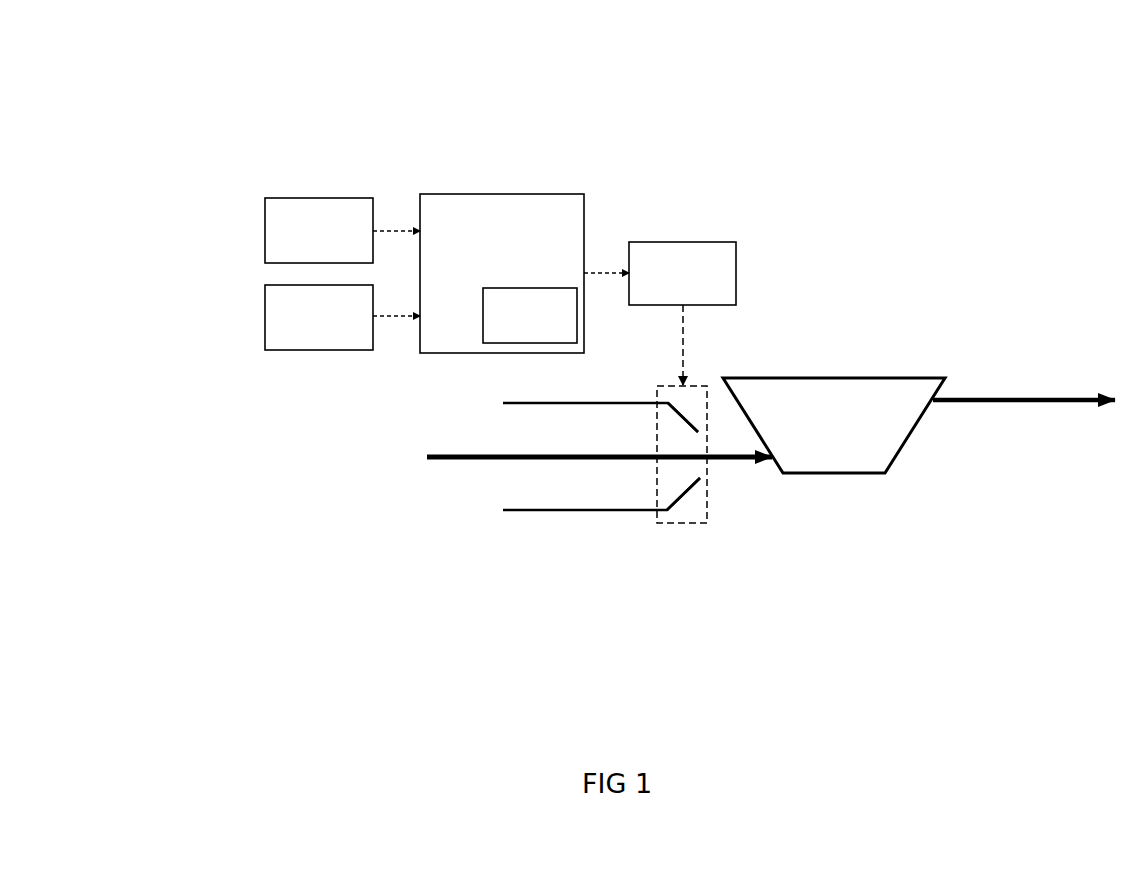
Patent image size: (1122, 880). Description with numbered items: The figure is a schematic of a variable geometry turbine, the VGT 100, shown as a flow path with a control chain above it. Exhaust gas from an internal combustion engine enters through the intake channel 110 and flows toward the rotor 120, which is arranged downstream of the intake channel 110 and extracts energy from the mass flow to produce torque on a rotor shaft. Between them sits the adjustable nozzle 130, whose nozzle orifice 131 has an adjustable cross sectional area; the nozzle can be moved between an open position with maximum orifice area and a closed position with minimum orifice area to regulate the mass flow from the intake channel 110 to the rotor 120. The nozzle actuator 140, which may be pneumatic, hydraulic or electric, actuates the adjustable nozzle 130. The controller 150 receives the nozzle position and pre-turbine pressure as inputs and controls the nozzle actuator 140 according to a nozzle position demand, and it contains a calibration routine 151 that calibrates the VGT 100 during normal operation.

The VGT 100 is at (147, 73).
The intake channel 110 is at (473, 500).
The rotor 120 is at (919, 425).
The adjustable nozzle 130 is at (708, 528).
The nozzle orifice 131 is at (712, 492).
The nozzle actuator 140 is at (682, 273).
The controller 150 is at (502, 273).
The calibration routine 151 is at (530, 315).